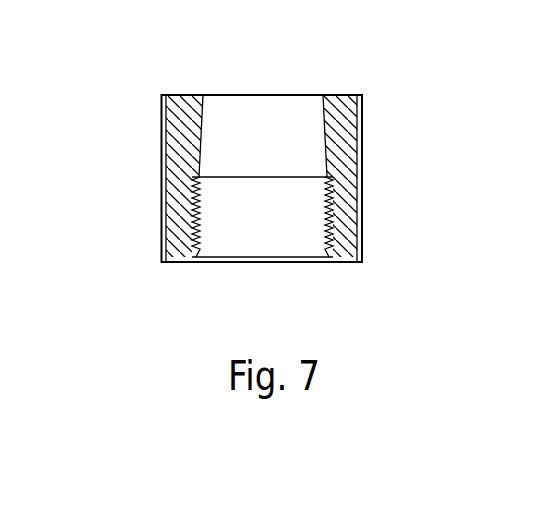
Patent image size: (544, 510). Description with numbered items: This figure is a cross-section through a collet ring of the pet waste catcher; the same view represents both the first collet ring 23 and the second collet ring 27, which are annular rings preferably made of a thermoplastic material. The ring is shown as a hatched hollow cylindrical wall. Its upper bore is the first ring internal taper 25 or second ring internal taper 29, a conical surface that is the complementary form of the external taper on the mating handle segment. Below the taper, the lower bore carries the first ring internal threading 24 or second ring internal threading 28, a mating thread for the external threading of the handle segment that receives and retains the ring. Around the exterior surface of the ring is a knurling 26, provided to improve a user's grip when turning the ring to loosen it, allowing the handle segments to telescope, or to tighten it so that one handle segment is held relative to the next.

The first collet ring 23 is at (289, 178).
The second collet ring 27 is at (289, 178).
The first ring internal threading 24 is at (262, 235).
The second ring internal threading 28 is at (193, 252).
The first ring internal taper 25 is at (262, 112).
The second ring internal taper 29 is at (325, 108).
The knurling 26 is at (164, 170).